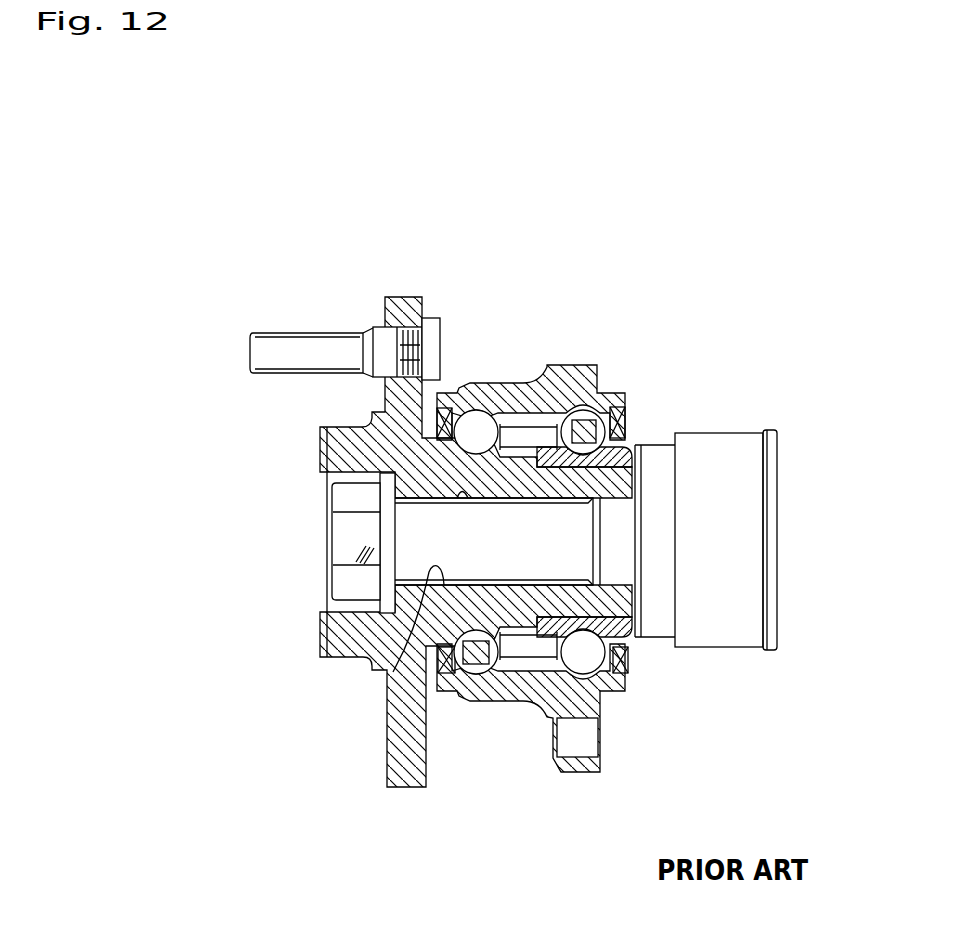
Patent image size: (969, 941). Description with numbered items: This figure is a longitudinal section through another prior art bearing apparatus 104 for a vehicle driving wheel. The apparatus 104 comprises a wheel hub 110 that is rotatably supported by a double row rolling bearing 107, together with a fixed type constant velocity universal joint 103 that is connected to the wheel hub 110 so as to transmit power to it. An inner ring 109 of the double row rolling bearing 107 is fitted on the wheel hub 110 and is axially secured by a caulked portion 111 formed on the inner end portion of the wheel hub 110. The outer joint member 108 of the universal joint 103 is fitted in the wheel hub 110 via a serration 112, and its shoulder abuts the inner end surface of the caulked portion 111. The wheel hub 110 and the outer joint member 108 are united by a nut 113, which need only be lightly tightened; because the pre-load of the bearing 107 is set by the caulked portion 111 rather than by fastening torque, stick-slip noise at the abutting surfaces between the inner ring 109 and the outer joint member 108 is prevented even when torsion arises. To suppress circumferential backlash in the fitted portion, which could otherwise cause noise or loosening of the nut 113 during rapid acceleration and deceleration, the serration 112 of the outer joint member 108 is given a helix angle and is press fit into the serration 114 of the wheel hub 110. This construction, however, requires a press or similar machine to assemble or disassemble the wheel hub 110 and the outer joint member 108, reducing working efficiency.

The fixed type constant velocity universal joint 103 is at (758, 414).
The bearing apparatus 104 is at (295, 297).
The double row rolling bearing 107 is at (615, 374).
The outer joint member 108 is at (665, 487).
The inner ring 109 is at (633, 443).
The wheel hub 110 is at (362, 414).
The caulked portion 111 is at (648, 626).
The serration 112 is at (470, 500).
The nut 113 is at (318, 602).
The serration 114 is at (393, 670).